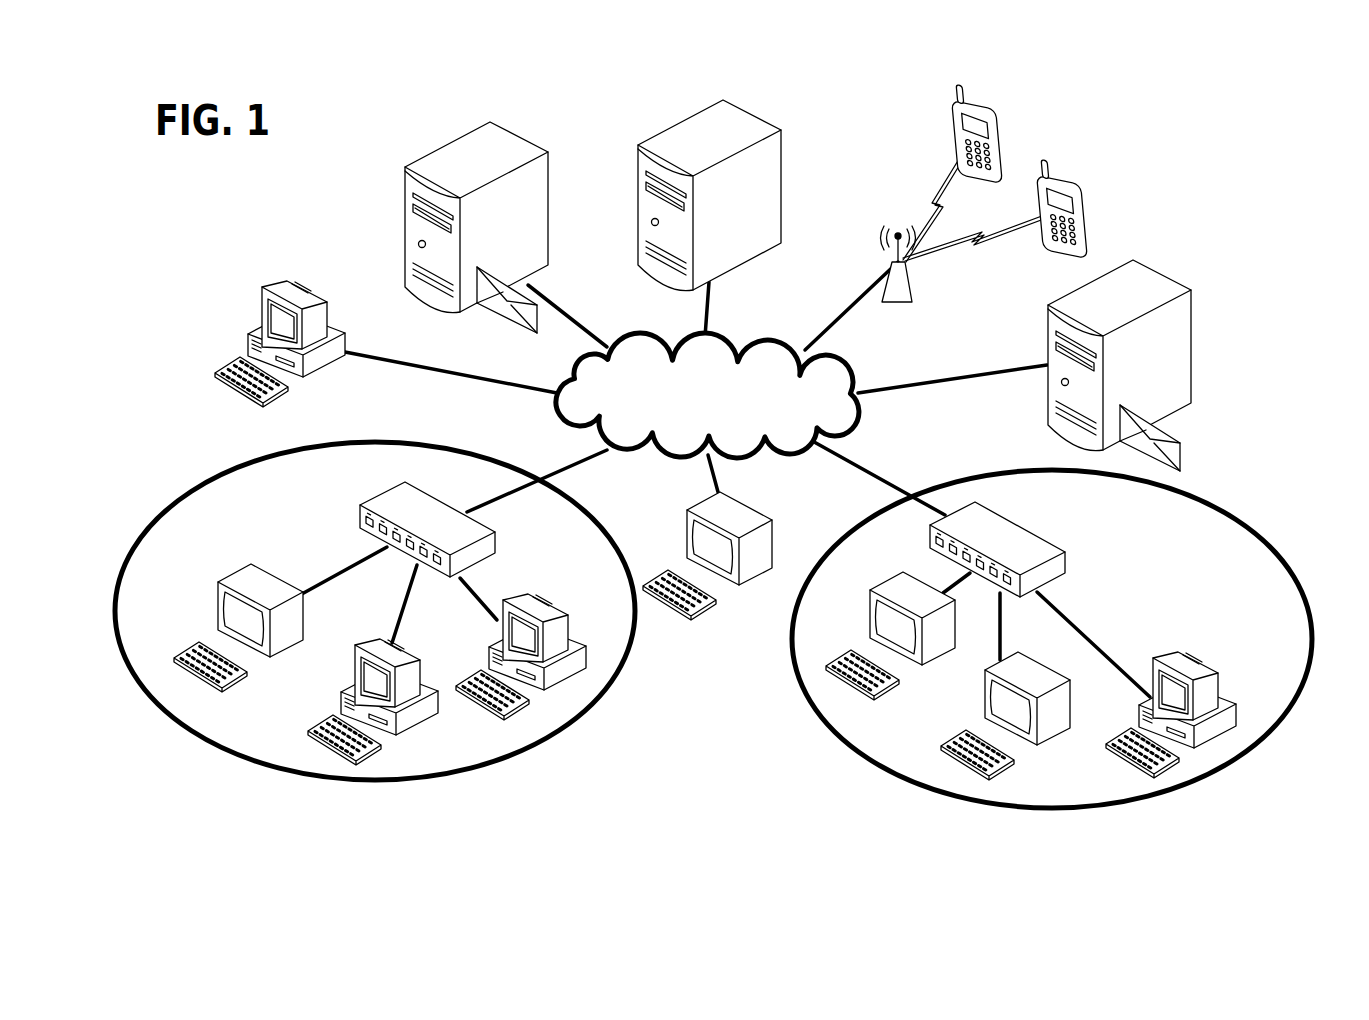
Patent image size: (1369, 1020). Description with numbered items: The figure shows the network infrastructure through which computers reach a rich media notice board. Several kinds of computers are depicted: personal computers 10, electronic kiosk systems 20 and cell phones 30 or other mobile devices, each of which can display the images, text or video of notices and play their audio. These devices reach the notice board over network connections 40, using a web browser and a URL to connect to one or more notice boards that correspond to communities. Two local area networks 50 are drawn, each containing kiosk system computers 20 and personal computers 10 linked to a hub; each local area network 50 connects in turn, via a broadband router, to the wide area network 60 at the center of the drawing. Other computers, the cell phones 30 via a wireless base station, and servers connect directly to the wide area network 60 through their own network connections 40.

The personal computer 10 is at (277, 285).
The electronic kiosk system 20 is at (218, 587).
The cell phone 30 is at (997, 113).
The network connection 40 is at (487, 380).
The local area network (LAN) 50 is at (360, 443).
The wide area network (WAN) 60 is at (667, 347).